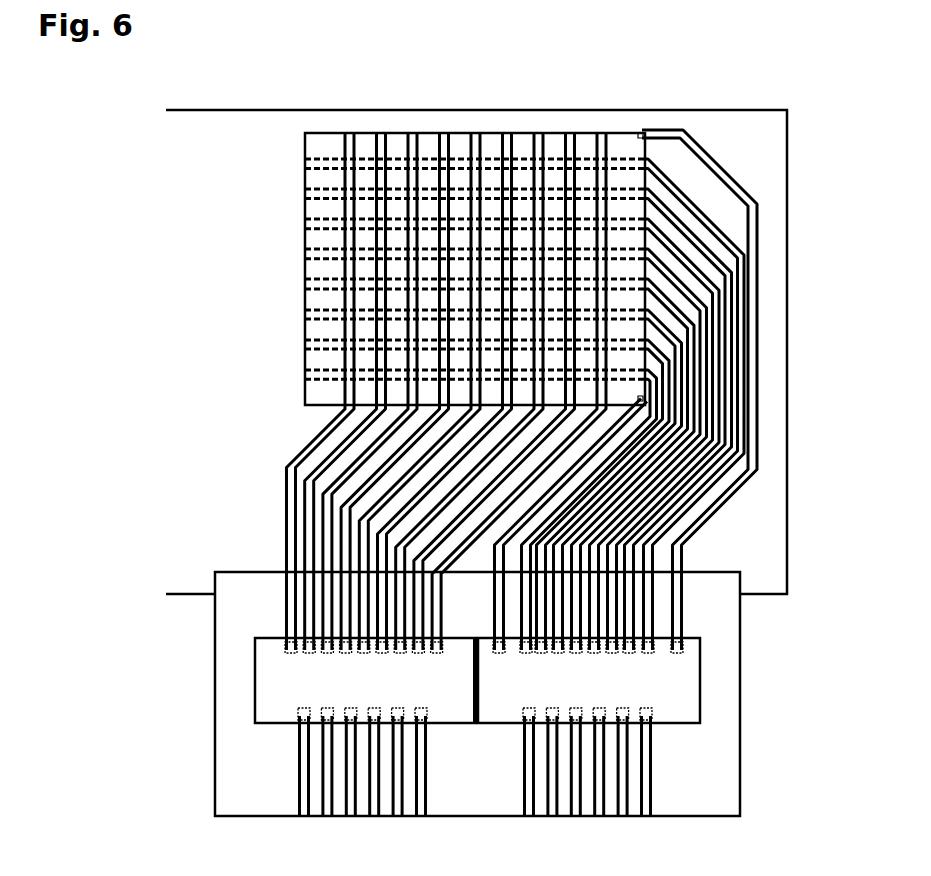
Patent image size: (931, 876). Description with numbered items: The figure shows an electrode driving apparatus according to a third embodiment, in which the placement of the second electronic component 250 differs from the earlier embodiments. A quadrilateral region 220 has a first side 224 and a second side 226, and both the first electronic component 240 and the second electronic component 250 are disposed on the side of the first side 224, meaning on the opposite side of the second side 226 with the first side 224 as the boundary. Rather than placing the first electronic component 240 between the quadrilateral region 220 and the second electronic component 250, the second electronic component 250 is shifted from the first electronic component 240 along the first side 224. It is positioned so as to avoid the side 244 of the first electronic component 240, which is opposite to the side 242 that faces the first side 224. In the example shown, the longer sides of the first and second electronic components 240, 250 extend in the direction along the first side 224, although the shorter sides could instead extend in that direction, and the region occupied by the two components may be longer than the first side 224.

The quadrilateral region 220 is at (305, 300).
The second side 226 is at (305, 363).
The first side 224 is at (328, 407).
The first electronic component 240 is at (272, 685).
The side 242 is at (272, 645).
The side 244 is at (272, 729).
The second electronic component 250 is at (680, 683).